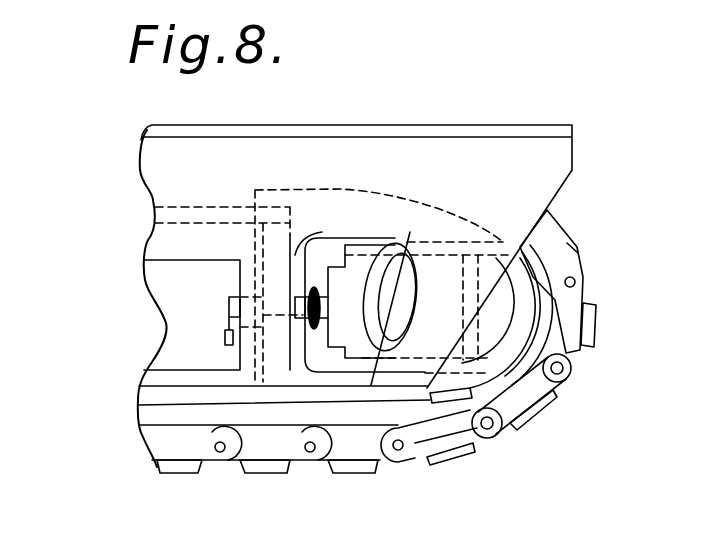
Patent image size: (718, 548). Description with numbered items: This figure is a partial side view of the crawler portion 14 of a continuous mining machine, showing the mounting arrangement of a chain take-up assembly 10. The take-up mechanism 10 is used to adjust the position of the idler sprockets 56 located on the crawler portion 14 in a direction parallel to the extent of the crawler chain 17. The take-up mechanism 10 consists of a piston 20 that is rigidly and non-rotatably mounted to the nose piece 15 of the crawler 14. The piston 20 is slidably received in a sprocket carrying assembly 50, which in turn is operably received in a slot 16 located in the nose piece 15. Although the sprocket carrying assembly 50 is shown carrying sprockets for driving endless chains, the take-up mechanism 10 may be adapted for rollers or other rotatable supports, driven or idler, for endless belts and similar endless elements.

The chain take-up assembly 10 is at (352, 385).
The crawler portion 14 is at (168, 155).
The nose piece 15 is at (323, 188).
The slot 16 is at (592, 275).
The crawler chain 17 is at (530, 395).
The piston 20 is at (313, 288).
The sprocket carrying assembly 50 is at (355, 290).
The idler sprockets 56 is at (520, 330).